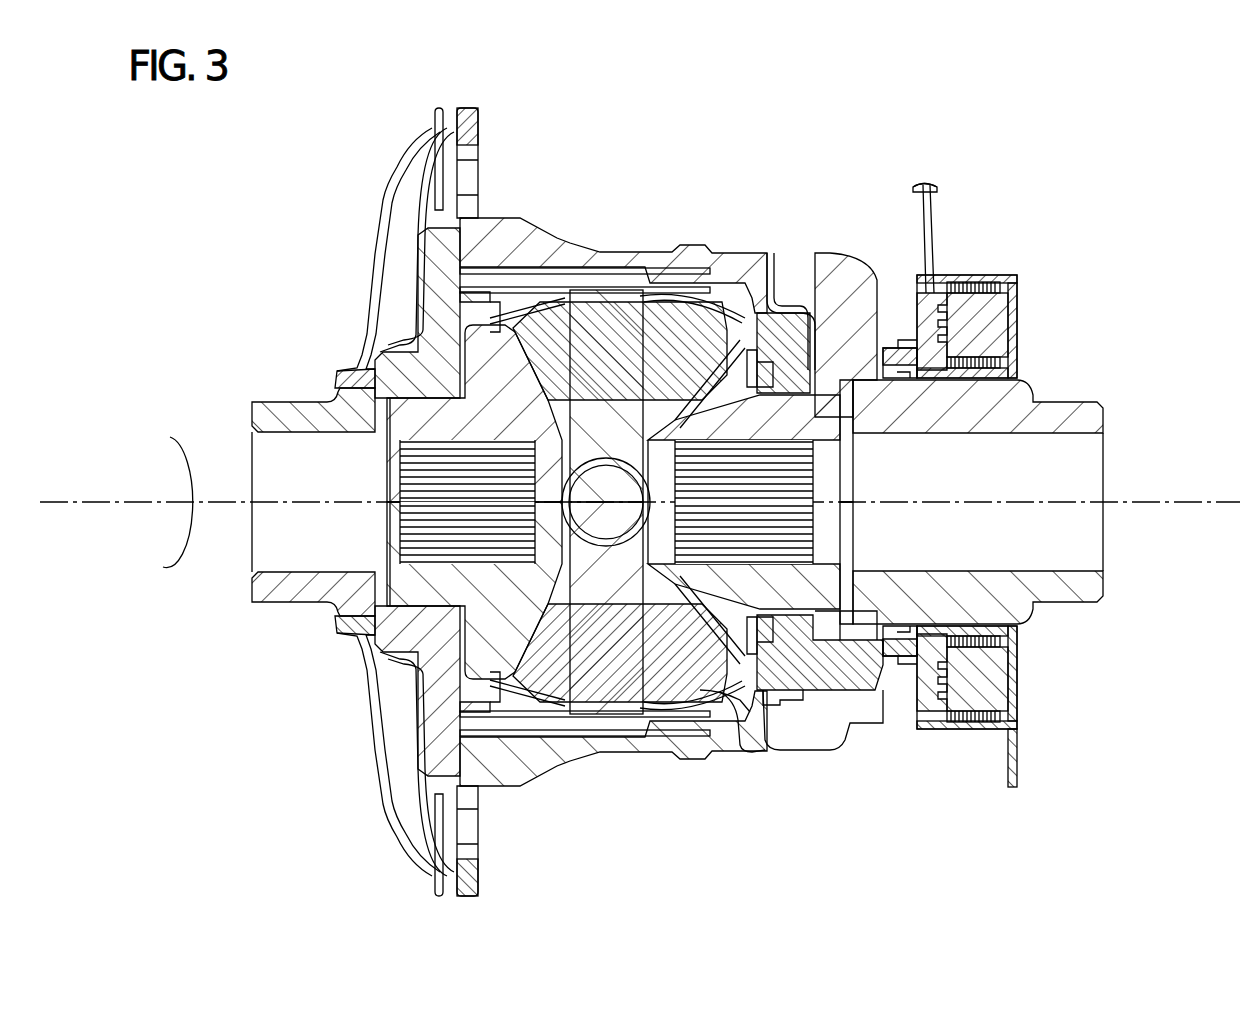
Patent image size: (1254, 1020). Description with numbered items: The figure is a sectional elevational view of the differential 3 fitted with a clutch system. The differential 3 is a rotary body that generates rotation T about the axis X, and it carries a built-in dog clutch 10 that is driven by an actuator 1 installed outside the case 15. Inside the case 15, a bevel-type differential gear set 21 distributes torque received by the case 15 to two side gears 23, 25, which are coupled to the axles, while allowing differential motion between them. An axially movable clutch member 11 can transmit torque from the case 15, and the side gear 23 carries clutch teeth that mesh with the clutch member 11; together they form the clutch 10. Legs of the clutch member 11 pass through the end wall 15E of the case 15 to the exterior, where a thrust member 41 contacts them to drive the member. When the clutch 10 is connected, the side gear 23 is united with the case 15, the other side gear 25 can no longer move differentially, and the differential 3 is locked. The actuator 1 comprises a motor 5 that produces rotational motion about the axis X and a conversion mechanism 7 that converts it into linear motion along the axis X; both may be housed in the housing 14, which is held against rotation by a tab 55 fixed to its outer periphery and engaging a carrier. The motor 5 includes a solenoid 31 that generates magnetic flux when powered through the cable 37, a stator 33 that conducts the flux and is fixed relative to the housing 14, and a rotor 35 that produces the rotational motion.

The actuator 1 is at (982, 457).
The differential 3 is at (626, 482).
The motor 5 is at (985, 257).
The conversion mechanism 7 is at (898, 260).
The dog clutch 10 is at (745, 762).
The clutch member 11 is at (890, 690).
The housing 14 is at (1010, 262).
The case 15 is at (678, 258).
The end wall 15E is at (792, 256).
The differential gear set 21 is at (607, 762).
The side gear 23 is at (735, 702).
The side gear 25 is at (490, 700).
The solenoid 31 is at (975, 722).
The stator 33 is at (1020, 697).
The rotor 35 is at (920, 698).
The cable 37 is at (938, 253).
The thrust member 41 is at (878, 262).
The tab 55 is at (1020, 765).
The rotation T is at (150, 470).
The axis X is at (80, 500).